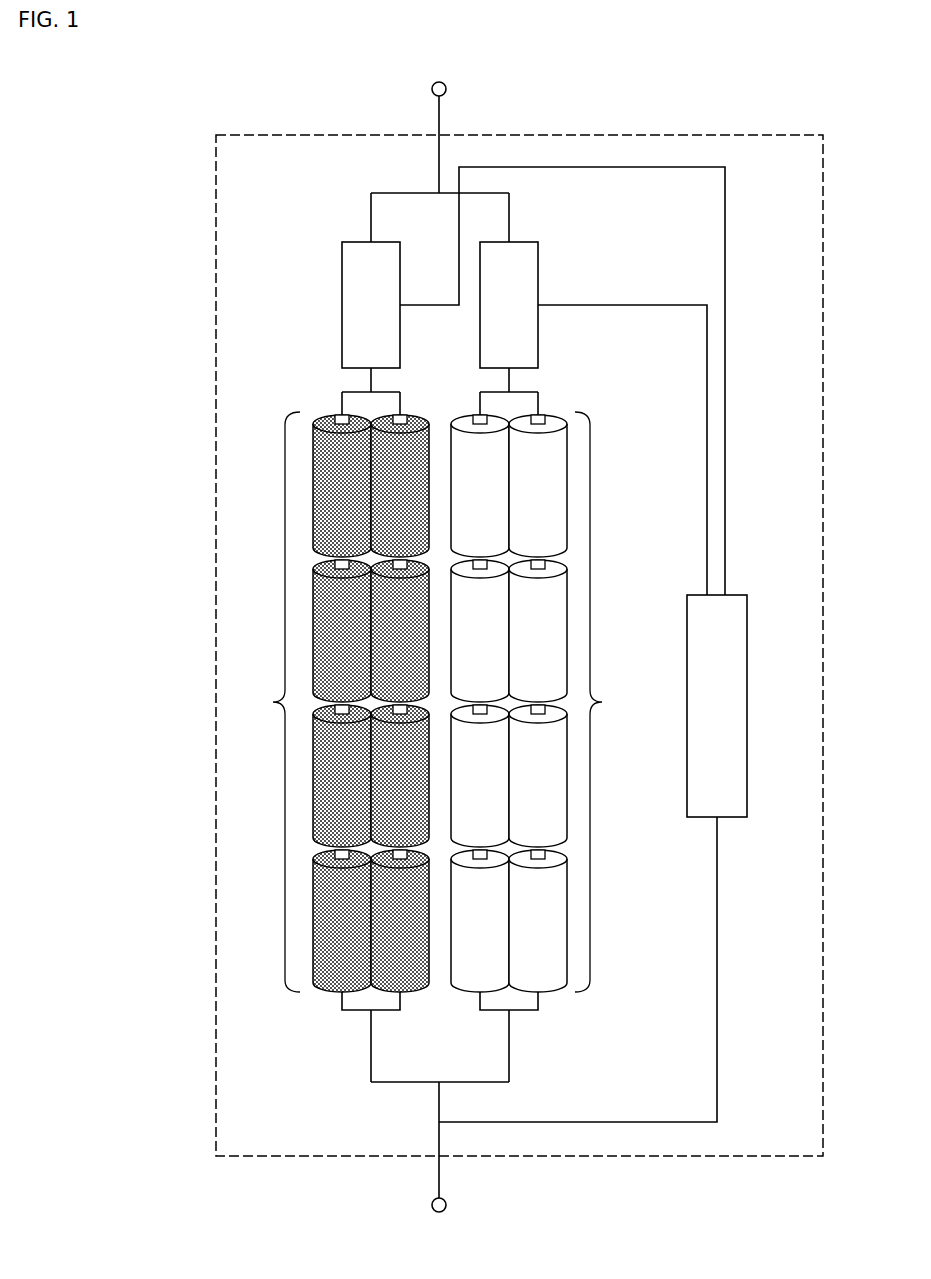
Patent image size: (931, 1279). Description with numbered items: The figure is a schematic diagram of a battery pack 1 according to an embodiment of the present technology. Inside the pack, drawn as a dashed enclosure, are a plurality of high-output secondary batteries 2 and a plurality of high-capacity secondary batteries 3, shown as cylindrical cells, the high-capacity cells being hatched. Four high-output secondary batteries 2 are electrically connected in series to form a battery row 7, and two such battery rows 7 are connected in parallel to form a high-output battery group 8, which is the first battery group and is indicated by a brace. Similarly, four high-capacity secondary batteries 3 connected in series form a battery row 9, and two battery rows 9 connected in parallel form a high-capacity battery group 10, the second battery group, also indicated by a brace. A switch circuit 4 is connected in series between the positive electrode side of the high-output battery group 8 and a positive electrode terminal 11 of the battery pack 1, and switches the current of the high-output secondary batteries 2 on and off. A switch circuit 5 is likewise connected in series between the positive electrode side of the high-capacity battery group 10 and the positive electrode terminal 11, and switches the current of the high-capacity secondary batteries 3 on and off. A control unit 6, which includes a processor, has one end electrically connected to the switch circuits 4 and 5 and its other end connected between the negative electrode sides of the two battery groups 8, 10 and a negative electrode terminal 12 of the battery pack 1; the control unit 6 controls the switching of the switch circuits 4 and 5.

The battery pack 1 is at (216, 252).
The high-output secondary battery 2 is at (547, 490).
The high-capacity secondary battery 3 is at (410, 600).
The switch circuit 4 is at (538, 275).
The switch circuit 5 is at (342, 274).
The control unit 6 is at (748, 703).
The battery row 7 is at (554, 748).
The high-output battery group 8 is at (596, 702).
The battery row 9 is at (473, 748).
The high-capacity battery group 10 is at (271, 702).
The positive electrode terminal 11 is at (448, 89).
The negative electrode terminal 12 is at (448, 1205).